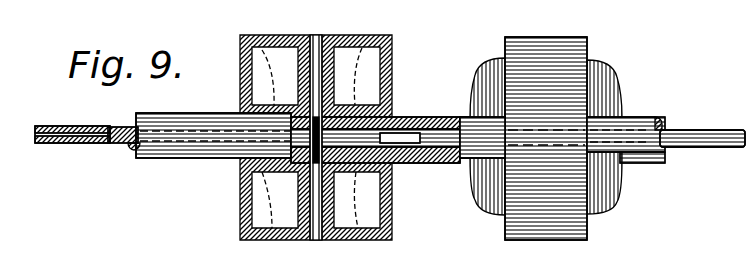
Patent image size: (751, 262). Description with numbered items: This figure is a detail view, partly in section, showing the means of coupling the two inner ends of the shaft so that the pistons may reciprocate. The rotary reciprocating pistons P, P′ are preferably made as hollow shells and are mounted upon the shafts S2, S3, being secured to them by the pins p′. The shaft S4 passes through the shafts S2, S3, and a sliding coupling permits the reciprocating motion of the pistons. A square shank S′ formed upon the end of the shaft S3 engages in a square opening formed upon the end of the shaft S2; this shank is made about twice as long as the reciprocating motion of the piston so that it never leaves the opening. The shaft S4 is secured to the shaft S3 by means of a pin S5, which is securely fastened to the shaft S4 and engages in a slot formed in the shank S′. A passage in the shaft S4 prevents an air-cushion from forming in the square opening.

The rotary reciprocating piston P is at (352, 86).
The pin p′ is at (312, 38).
The rotary reciprocating piston P′ is at (552, 113).
The square shank S′ is at (398, 158).
The shaft S2 is at (213, 122).
The shaft S3 is at (70, 143).
The shaft S4 is at (117, 145).
The pin S5 is at (420, 117).